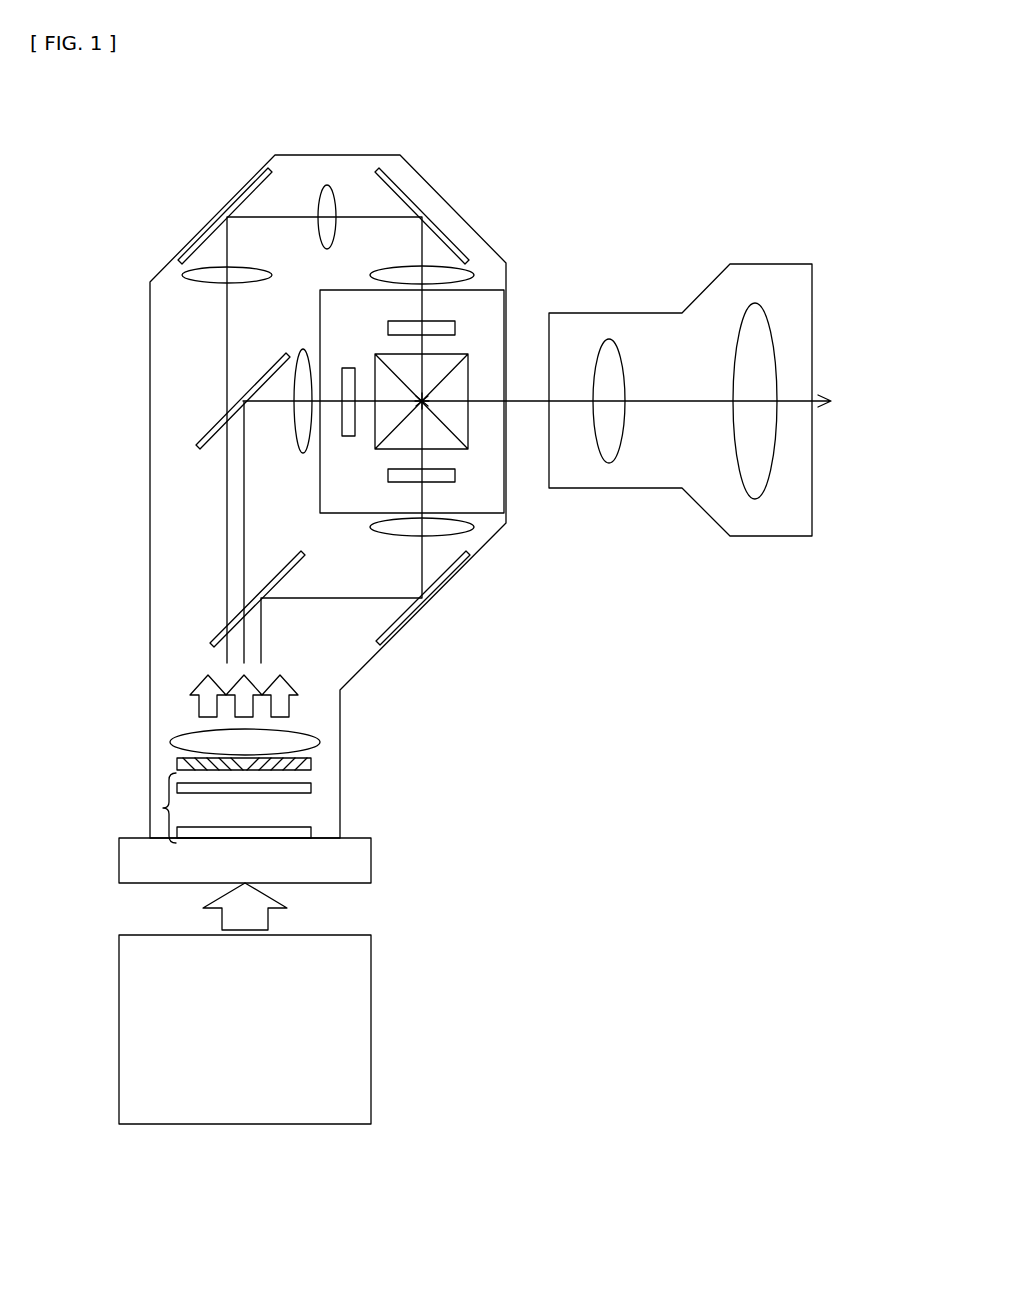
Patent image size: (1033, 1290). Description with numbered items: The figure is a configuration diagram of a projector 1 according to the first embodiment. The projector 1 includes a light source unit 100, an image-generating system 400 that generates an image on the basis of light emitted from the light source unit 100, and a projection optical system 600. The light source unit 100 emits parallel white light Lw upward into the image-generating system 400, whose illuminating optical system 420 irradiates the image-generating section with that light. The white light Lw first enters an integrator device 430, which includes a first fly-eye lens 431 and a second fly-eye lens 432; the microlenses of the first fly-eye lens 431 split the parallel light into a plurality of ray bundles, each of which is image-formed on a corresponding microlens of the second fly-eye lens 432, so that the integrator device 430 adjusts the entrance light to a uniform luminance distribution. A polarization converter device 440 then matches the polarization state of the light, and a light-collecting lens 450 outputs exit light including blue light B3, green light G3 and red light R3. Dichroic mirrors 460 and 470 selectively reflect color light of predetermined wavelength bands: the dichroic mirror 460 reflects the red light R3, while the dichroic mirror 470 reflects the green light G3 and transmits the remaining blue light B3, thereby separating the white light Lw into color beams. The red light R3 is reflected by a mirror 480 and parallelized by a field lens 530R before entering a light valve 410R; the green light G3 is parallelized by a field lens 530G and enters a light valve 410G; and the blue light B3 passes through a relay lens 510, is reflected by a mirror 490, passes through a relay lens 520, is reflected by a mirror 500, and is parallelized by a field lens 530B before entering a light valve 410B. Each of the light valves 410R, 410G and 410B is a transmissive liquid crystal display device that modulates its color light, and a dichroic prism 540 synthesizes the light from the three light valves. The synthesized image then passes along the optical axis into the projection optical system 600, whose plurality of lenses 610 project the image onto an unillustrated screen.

The projector 1 is at (610, 128).
The light source unit 100 is at (372, 1028).
The image-generating system 400 is at (390, 641).
The light valve for blue 410B is at (456, 328).
The light valve for green 410G is at (347, 368).
The light valve for red 410R is at (456, 475).
The illuminating optical system 420 is at (193, 568).
The integrator device 430 is at (162, 808).
The first fly-eye lens 431 is at (298, 827).
The second fly-eye lens 432 is at (312, 787).
The polarization converter device 440 is at (312, 764).
The light-collecting lens 450 is at (320, 742).
The dichroic mirror 460 is at (212, 638).
The dichroic mirror 470 is at (212, 428).
The mirror 480 is at (437, 589).
The mirror 490 is at (223, 218).
The mirror 500 is at (424, 218).
The relay lens 510 is at (183, 274).
The relay lens 520 is at (327, 185).
The field lens for blue 530B is at (474, 273).
The field lens for green 530G is at (295, 427).
The field lens for red 530R is at (474, 527).
The dichroic prism 540 is at (469, 374).
The projection optical system 600 is at (772, 538).
The lenses 610 is at (755, 303).
The green light G3 is at (197, 683).
The blue light B3 is at (199, 707).
The red light R3 is at (289, 706).
The white light Lw is at (271, 897).